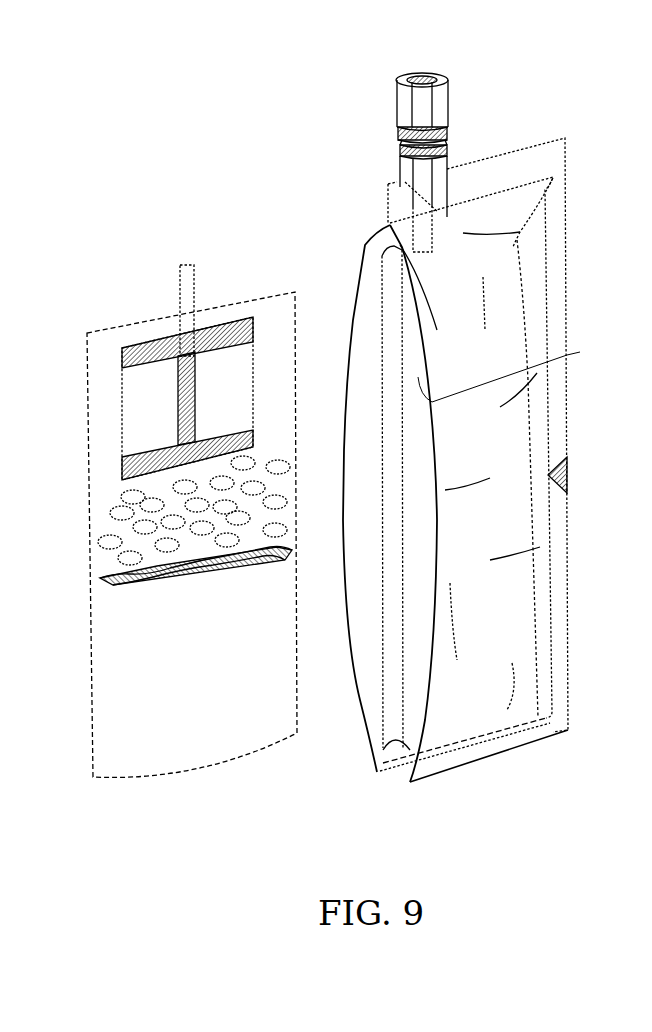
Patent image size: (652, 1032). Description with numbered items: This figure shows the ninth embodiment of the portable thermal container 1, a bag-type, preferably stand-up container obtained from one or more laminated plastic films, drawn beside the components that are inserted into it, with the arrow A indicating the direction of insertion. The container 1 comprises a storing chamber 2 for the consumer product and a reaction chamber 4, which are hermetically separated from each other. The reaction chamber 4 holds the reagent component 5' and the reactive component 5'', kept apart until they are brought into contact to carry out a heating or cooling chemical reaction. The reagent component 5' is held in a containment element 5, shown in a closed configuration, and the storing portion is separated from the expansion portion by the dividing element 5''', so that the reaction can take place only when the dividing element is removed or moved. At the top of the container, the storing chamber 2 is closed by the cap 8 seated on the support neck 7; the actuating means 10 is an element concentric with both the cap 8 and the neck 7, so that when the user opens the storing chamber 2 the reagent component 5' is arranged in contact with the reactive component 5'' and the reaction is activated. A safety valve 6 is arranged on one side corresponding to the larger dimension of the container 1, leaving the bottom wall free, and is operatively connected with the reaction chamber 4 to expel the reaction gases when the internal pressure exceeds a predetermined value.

The portable thermal container 1 is at (527, 143).
The storing chamber 2 is at (580, 352).
The reaction chamber 4 is at (93, 595).
The containment element 5 is at (199, 356).
The reagent component 5' is at (226, 398).
The reactive component 5'' is at (175, 510).
The dividing element 5''' is at (221, 635).
The safety valve 6 is at (567, 468).
The support neck 7 is at (398, 150).
The cap 8 is at (402, 100).
The actuating means 10 is at (186, 262).
The insertion direction arrow A is at (397, 458).